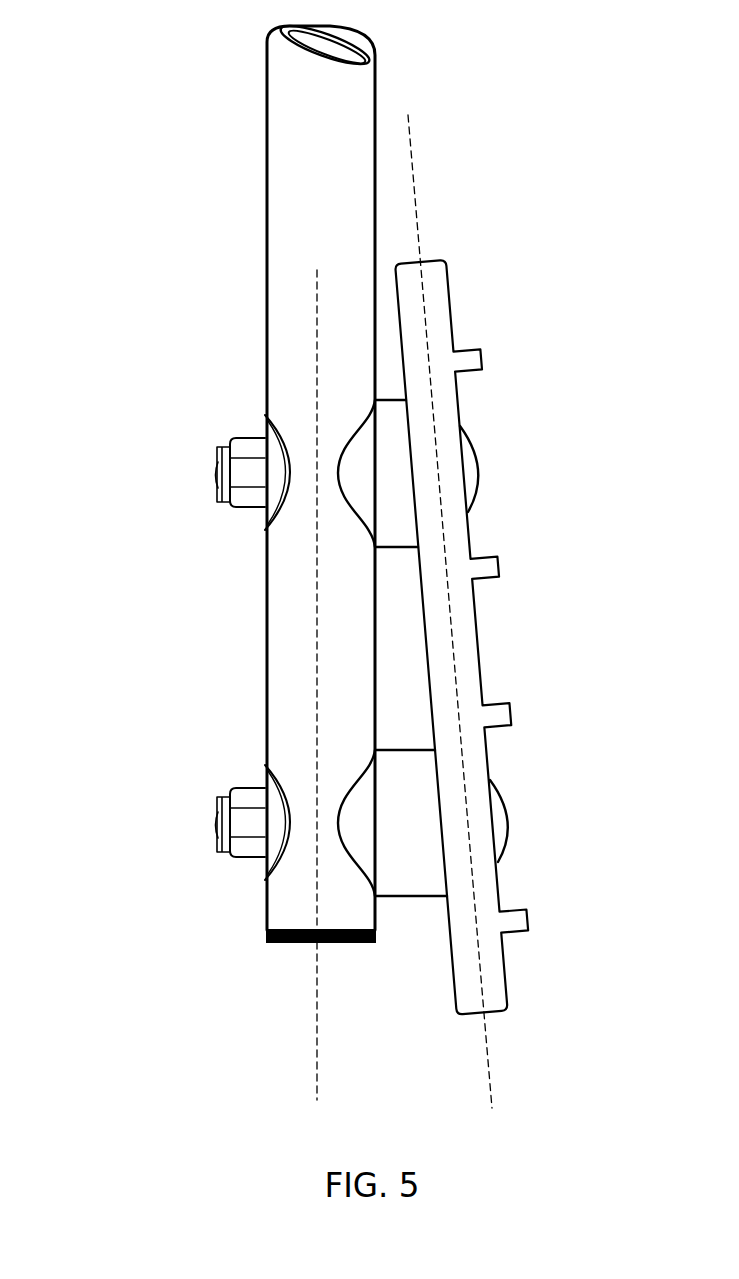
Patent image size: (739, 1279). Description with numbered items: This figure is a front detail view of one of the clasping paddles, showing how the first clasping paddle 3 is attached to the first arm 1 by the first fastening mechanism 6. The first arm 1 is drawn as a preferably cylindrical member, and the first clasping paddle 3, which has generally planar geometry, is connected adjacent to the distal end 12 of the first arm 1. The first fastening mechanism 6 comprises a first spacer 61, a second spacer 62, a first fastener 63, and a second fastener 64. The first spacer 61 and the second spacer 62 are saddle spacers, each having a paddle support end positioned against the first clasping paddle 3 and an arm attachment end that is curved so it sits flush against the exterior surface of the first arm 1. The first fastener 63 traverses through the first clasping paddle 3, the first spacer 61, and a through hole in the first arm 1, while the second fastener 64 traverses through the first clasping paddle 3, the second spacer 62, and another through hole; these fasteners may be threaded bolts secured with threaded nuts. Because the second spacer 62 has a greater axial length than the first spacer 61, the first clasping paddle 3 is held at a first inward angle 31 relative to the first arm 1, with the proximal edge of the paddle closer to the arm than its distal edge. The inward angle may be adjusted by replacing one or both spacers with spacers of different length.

The first arm 1 is at (287, 140).
The first clasping paddle 3 is at (553, 287).
The first fastening mechanism 6 is at (135, 460).
The distal end 12 is at (285, 992).
The first inward angle 31 is at (481, 1040).
The first spacer 61 is at (366, 489).
The second spacer 62 is at (387, 851).
The first fastener 63 is at (470, 458).
The second fastener 64 is at (500, 820).